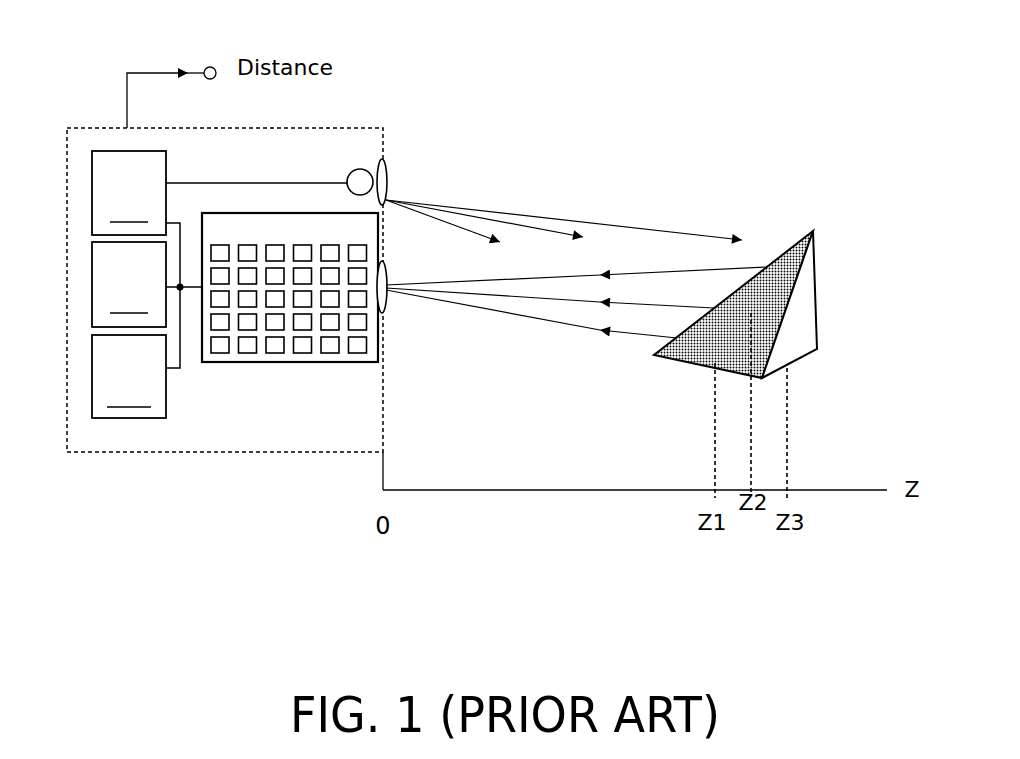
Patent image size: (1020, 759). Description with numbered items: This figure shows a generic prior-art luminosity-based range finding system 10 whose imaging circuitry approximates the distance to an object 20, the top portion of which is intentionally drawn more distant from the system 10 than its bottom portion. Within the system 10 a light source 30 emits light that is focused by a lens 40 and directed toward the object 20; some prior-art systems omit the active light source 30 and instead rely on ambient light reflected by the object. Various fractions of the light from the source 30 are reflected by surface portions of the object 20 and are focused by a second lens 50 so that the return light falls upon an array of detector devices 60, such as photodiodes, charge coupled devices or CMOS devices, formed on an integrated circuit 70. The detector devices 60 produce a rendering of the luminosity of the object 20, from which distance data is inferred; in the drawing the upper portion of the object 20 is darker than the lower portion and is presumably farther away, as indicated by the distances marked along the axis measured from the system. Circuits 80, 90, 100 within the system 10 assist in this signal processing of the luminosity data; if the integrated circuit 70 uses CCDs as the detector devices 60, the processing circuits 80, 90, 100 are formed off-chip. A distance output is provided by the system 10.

The system 10 is at (88, 92).
The object 20 is at (825, 258).
The light source 30 is at (345, 162).
The lens 40 is at (390, 168).
The lens 50 is at (392, 302).
The detector devices 60 is at (218, 344).
The integrated circuit 70 is at (242, 220).
The circuit 80 is at (129, 193).
The circuit 90 is at (129, 284).
The circuit 100 is at (129, 376).